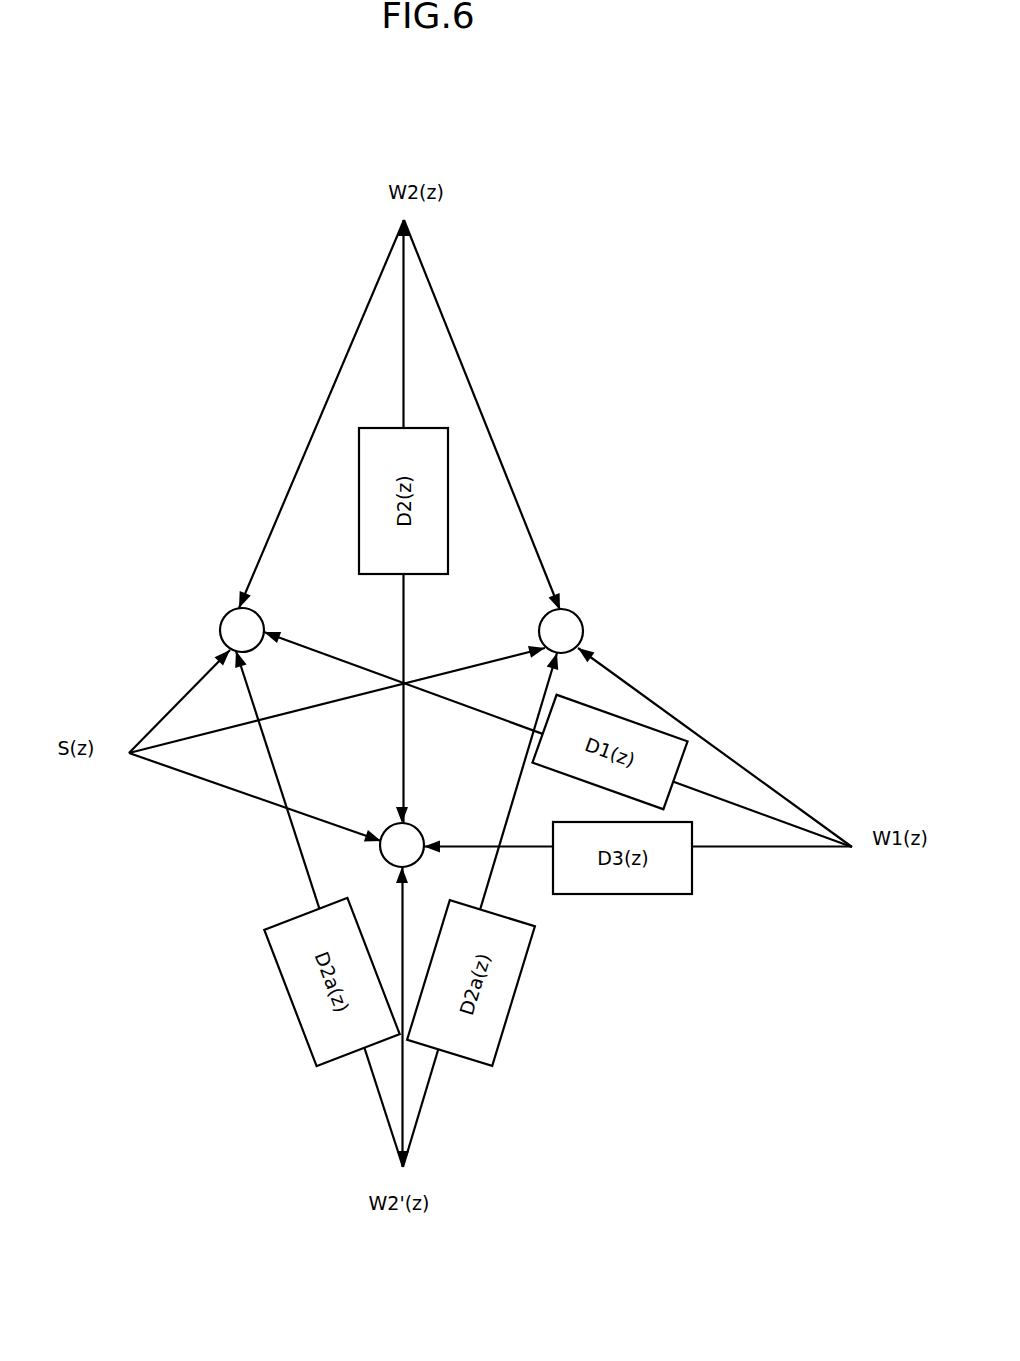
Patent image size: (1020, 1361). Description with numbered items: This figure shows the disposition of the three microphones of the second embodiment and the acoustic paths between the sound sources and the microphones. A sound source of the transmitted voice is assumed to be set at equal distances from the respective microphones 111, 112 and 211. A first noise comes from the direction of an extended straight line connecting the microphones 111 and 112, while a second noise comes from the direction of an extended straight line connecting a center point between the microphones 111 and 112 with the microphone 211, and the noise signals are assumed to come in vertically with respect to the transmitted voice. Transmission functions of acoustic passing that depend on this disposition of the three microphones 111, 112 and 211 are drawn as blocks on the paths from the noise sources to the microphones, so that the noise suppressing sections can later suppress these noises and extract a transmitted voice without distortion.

The microphone 111 is at (227, 612).
The microphone 112 is at (582, 621).
The microphone 211 is at (388, 826).